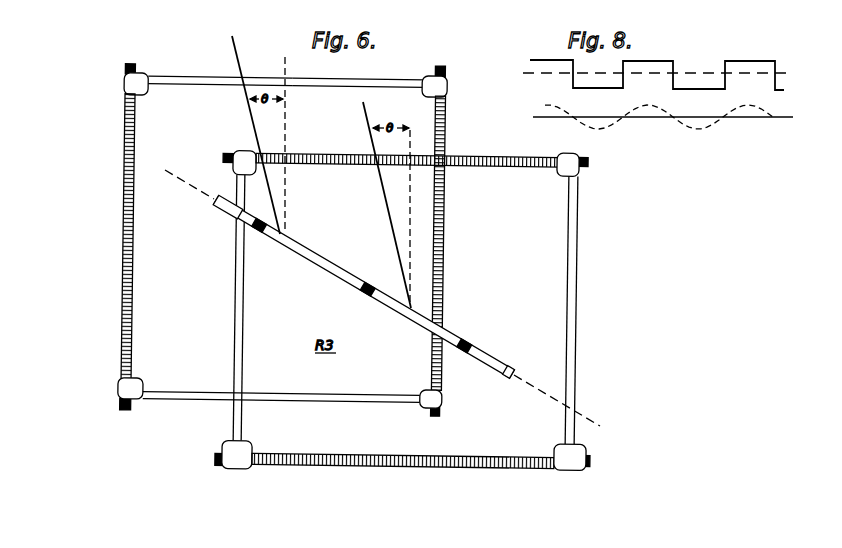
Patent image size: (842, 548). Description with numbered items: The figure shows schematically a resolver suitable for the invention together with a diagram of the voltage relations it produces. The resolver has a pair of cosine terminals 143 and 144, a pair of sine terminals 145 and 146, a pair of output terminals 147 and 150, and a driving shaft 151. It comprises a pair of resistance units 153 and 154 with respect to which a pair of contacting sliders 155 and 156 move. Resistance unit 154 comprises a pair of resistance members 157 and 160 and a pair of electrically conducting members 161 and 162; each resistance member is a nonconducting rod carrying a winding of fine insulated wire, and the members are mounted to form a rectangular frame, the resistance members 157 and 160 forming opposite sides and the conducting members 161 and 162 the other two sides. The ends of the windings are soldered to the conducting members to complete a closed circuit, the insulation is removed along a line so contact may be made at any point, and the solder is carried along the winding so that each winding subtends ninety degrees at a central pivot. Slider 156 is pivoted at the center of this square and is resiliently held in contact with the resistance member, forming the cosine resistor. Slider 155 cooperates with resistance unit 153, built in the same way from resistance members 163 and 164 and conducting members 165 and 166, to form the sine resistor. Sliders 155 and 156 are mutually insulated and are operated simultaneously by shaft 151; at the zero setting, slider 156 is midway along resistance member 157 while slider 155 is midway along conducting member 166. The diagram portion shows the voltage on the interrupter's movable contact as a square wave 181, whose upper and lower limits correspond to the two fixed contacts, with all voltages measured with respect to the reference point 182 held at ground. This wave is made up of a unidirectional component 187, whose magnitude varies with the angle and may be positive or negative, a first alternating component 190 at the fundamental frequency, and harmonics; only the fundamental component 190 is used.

In FIG. 6, the cosine terminal 143 is at (250, 460).
In FIG. 6, the cosine terminal 144 is at (556, 462).
In FIG. 6, the sine terminal 145 is at (141, 82).
In FIG. 6, the sine terminal 146 is at (135, 392).
In FIG. 6, the output terminal 147 is at (284, 239).
In FIG. 6, the output terminal 150 is at (404, 310).
In FIG. 6, the driving shaft 151 is at (486, 360).
In FIG. 6, the resistance unit 153 is at (172, 77).
In FIG. 6, the resistance unit 154 is at (580, 247).
In FIG. 6, the contacting slider 155 is at (252, 121).
In FIG. 6, the contacting slider 156 is at (381, 187).
In FIG. 6, the resistance member 157 is at (508, 167).
In FIG. 6, the resistance member 160 is at (426, 458).
In FIG. 6, the electrically conducting member 161 is at (566, 306).
In FIG. 6, the electrically conducting member 162 is at (244, 318).
In FIG. 6, the resistance member 163 is at (124, 233).
In FIG. 6, the resistance member 164 is at (447, 237).
In FIG. 6, the conducting member 165 is at (344, 401).
In FIG. 6, the conducting member 166 is at (368, 81).
In FIG. 8, the square wave 181 is at (748, 60).
In FIG. 8, the reference point 182 is at (707, 118).
In FIG. 8, the unidirectional component 187 is at (706, 72).
In FIG. 8, the first alternating component 190 is at (668, 112).